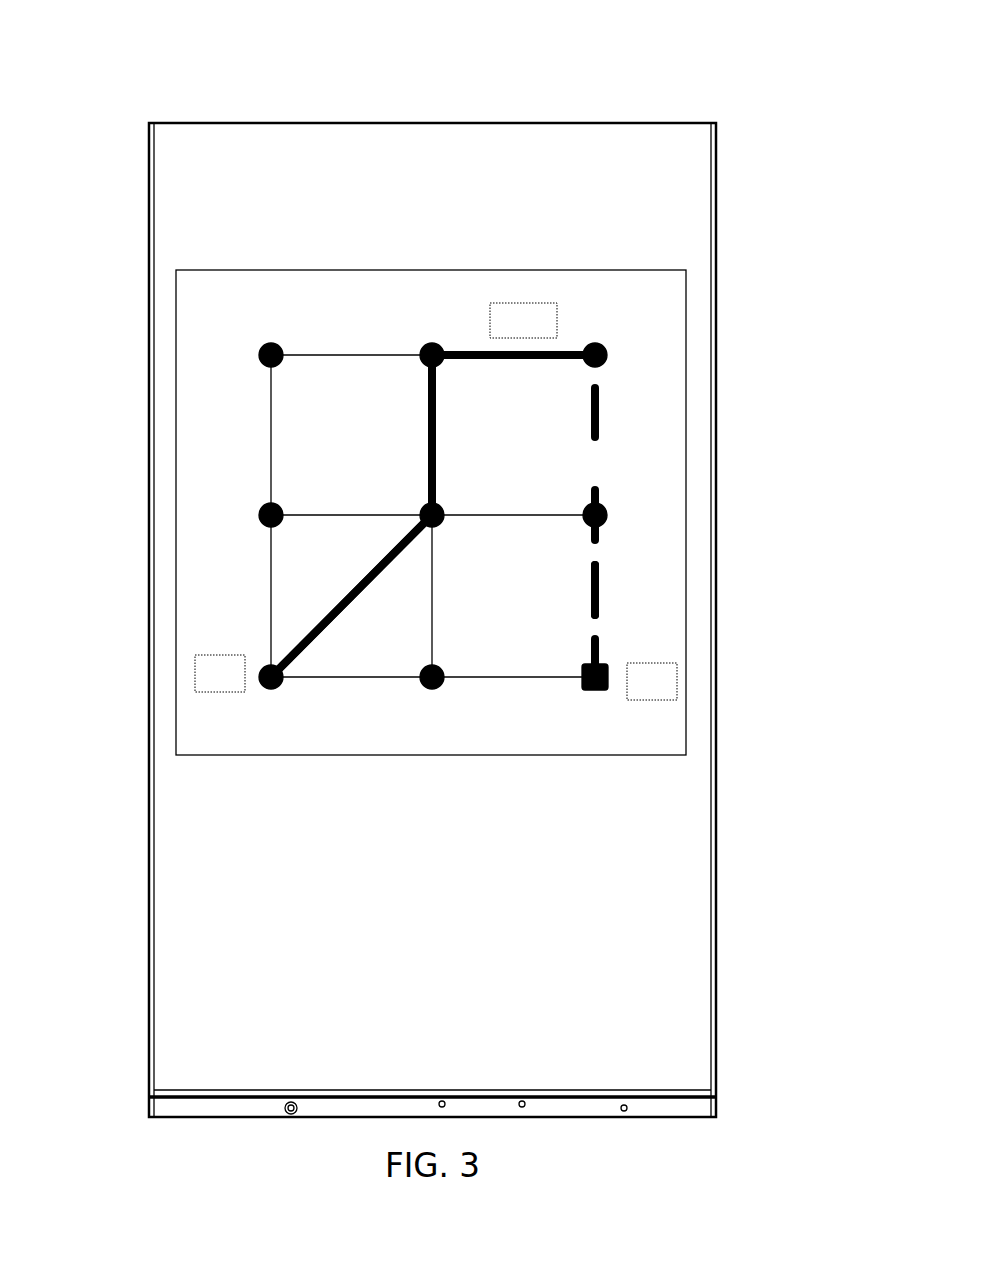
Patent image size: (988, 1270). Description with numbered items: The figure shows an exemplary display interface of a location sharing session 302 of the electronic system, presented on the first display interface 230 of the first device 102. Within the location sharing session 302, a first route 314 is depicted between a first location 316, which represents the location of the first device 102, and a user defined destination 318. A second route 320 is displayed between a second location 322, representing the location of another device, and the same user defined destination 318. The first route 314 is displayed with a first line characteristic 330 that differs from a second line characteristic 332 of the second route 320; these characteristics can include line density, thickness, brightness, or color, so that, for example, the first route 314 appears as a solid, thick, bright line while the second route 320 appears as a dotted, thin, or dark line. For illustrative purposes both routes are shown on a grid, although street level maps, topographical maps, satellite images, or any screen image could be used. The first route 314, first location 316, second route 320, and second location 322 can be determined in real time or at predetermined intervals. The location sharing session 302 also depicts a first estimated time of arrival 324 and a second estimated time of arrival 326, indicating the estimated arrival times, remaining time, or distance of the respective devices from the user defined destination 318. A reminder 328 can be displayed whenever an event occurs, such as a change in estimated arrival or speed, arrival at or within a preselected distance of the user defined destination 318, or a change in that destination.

The first device 102 is at (140, 55).
The first display interface 230 is at (693, 1082).
The location sharing session 302 is at (395, 112).
The first route 314 is at (373, 572).
The first location 316 is at (268, 669).
The user defined destination 318 is at (607, 351).
The second route 320 is at (598, 436).
The second location 322 is at (601, 666).
The first estimated time of arrival 324 is at (195, 673).
The second estimated time of arrival 326 is at (677, 680).
The reminder 328 is at (520, 303).
The first line characteristic 330 is at (465, 320).
The second line characteristic 332 is at (612, 580).